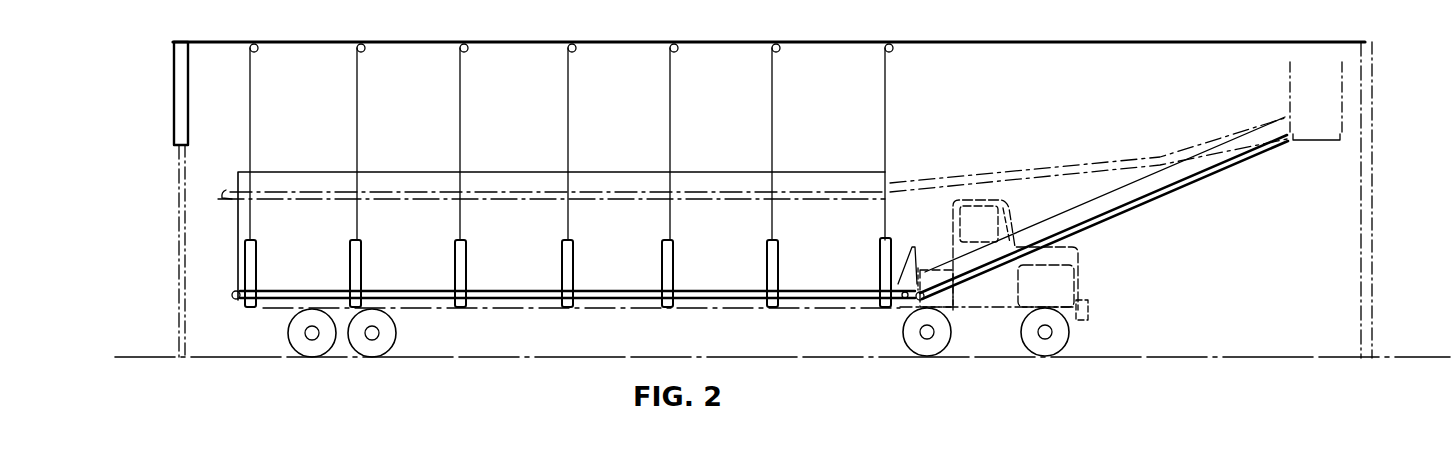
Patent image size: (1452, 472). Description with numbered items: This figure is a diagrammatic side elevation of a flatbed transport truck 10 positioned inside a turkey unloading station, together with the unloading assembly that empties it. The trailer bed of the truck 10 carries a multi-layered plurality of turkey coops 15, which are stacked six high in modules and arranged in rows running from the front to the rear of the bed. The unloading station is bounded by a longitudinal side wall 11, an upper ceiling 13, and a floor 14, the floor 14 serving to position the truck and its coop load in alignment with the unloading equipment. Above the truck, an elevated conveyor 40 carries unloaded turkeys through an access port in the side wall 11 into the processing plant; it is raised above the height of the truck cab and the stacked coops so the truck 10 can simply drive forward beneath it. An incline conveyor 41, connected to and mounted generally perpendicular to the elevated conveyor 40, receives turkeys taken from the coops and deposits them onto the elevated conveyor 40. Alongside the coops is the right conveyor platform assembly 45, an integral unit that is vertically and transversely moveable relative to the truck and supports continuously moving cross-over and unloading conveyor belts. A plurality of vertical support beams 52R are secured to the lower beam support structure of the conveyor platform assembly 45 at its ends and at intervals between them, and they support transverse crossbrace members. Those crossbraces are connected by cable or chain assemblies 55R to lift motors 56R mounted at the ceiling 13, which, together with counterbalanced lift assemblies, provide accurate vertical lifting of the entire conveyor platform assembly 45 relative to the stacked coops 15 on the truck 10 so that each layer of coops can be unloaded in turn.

The flatbed transport truck 10 is at (1080, 286).
The side wall 11 is at (1153, 97).
The ceiling 13 is at (1112, 41).
The floor 14 is at (1114, 356).
The turkey coops 15 is at (633, 172).
The elevated conveyor 40 is at (1316, 140).
The incline conveyor 41 is at (1050, 168).
The conveyor platform assembly 45 is at (623, 300).
The vertical support beam 52R is at (462, 306).
The cable or chain assembly 55R is at (358, 140).
The lift motor 56R is at (258, 52).